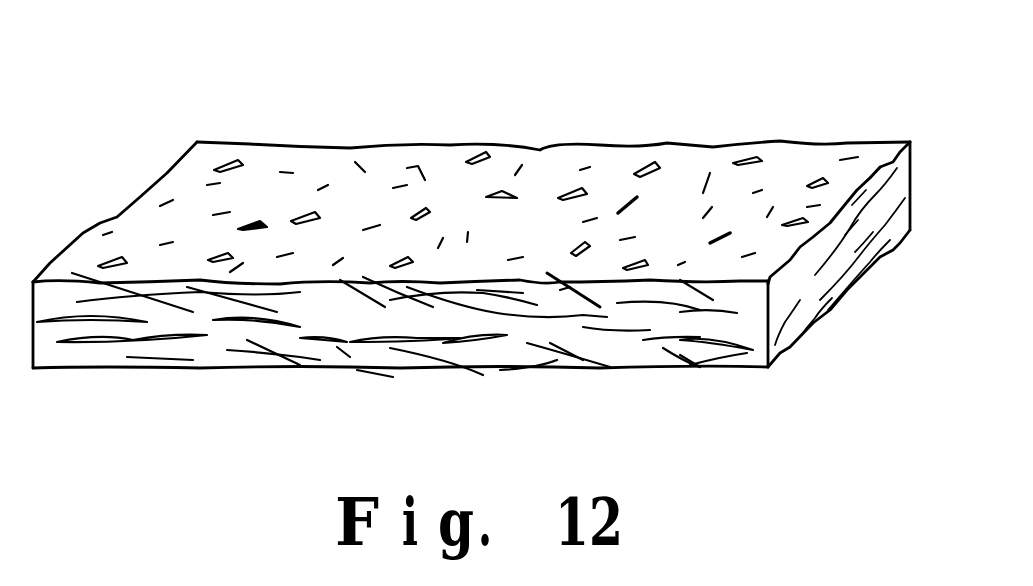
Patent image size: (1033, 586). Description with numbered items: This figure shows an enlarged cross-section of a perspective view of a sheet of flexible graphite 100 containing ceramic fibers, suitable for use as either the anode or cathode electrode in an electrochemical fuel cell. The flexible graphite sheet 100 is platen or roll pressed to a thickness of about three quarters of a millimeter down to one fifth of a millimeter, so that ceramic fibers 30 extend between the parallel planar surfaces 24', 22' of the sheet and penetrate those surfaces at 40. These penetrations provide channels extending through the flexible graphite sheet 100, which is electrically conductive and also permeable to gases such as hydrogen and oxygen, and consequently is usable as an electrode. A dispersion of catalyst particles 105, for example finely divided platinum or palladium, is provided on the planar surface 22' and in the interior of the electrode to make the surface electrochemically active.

The flexible graphite sheet 100 is at (433, 108).
The planar surface 22' is at (471, 184).
The planar surface 24' is at (400, 405).
The ceramic fibers 30 is at (110, 288).
The surface penetrations 40 is at (360, 170).
The catalyst particles 105 is at (228, 163).